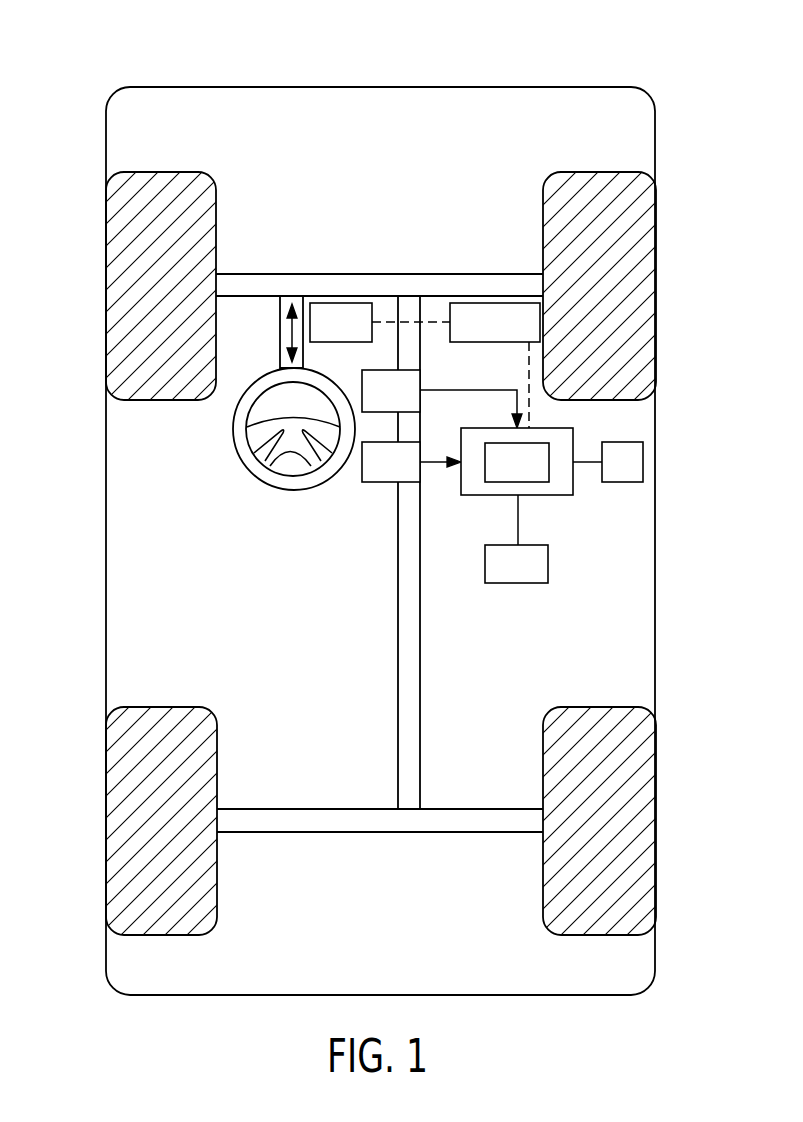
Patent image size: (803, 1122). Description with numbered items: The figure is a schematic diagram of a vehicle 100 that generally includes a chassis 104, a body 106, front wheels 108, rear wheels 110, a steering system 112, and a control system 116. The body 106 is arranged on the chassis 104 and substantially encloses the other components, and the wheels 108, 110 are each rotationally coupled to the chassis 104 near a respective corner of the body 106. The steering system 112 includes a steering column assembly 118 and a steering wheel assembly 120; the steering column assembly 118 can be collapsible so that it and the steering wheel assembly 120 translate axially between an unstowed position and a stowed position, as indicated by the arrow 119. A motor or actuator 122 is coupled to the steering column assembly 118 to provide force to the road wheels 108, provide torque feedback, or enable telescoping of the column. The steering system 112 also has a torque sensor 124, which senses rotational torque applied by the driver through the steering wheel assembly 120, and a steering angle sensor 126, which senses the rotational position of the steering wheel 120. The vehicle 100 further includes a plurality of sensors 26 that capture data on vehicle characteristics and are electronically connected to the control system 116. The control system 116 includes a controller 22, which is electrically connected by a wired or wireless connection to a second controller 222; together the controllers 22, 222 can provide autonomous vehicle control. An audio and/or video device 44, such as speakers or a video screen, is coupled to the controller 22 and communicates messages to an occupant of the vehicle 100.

The vehicle 100 is at (409, 87).
The chassis 104 is at (420, 620).
The body 106 is at (106, 543).
The front wheels 108 is at (158, 172).
The rear wheels 110 is at (158, 707).
The steering system 112 is at (290, 260).
The control system 116 is at (555, 497).
The steering column assembly 118 is at (283, 332).
The arrow 119 is at (296, 326).
The steering wheel assembly 120 is at (243, 461).
The motor or actuator 122 is at (341, 322).
The torque sensor 124 is at (391, 391).
The steering angle sensor 126 is at (391, 462).
The controller 222 is at (495, 322).
The controller 22 is at (517, 462).
The sensors 26 is at (516, 564).
The audio and/or video device 44 is at (622, 462).